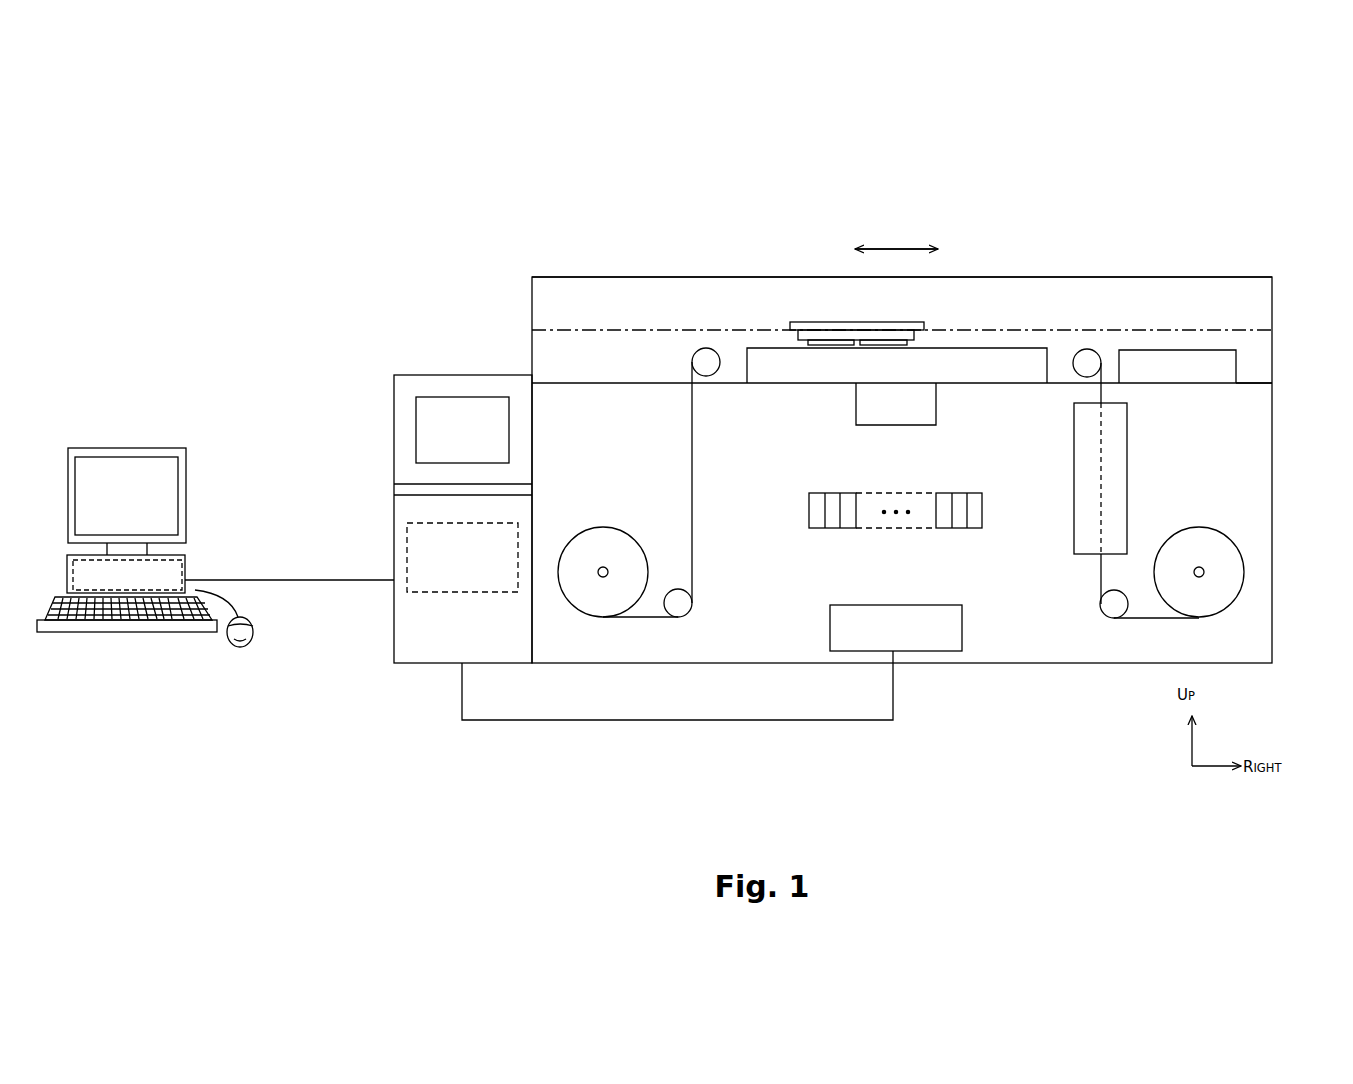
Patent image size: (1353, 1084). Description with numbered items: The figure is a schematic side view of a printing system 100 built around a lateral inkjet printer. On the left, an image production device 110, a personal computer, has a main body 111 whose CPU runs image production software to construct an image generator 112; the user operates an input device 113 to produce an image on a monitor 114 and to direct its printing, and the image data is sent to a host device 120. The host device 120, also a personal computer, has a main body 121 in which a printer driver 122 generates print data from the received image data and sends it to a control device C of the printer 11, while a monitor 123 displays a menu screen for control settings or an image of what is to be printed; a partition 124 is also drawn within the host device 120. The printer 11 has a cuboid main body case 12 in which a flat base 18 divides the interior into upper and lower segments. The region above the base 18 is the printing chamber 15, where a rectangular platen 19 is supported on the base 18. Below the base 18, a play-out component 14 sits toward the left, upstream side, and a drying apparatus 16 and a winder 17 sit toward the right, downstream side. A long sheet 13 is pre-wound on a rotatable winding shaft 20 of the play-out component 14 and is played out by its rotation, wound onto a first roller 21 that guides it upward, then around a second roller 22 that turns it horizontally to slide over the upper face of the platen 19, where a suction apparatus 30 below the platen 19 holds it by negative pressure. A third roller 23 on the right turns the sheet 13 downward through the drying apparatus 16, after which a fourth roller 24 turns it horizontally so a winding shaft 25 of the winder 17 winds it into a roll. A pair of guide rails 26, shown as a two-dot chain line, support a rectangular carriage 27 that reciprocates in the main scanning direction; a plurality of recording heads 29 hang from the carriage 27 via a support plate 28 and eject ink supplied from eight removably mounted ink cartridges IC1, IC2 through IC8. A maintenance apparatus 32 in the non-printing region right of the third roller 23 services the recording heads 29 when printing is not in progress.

The printing system 100 is at (1120, 207).
The image production device 110 is at (119, 446).
The main body 111 is at (185, 557).
The image generator 112 is at (183, 574).
The input device 113 is at (190, 633).
The monitor 114 is at (170, 469).
The host device 120 is at (427, 373).
The main body 121 is at (394, 532).
The printer driver 122 is at (453, 592).
The monitor 123 is at (420, 414).
The partition 124 is at (410, 484).
The lateral inkjet printer 11 is at (1274, 274).
The main body case 12 is at (1272, 304).
The sheet 13 is at (692, 457).
The play-out component 14 is at (563, 500).
The printing chamber 15 is at (692, 293).
The drying apparatus 16 is at (1128, 432).
The winder 17 is at (1231, 502).
The base 18 is at (1255, 383).
The platen 19 is at (747, 368).
The winding shaft 20 is at (603, 566).
The first roller 21 is at (686, 607).
The second roller 22 is at (698, 358).
The third roller 23 is at (1089, 356).
The fourth roller 24 is at (1104, 606).
The winding shaft 25 is at (1196, 566).
The guide rails 26 is at (980, 330).
The carriage 27 is at (924, 324).
The support plate 28 is at (790, 332).
The recording heads 29 is at (907, 343).
The suction apparatus 30 is at (898, 427).
The maintenance apparatus 32 is at (1236, 362).
The ink cartridge IC1 is at (815, 530).
The ink cartridge IC2 is at (840, 530).
The ink cartridge IC8 is at (975, 530).
The control device C is at (965, 628).